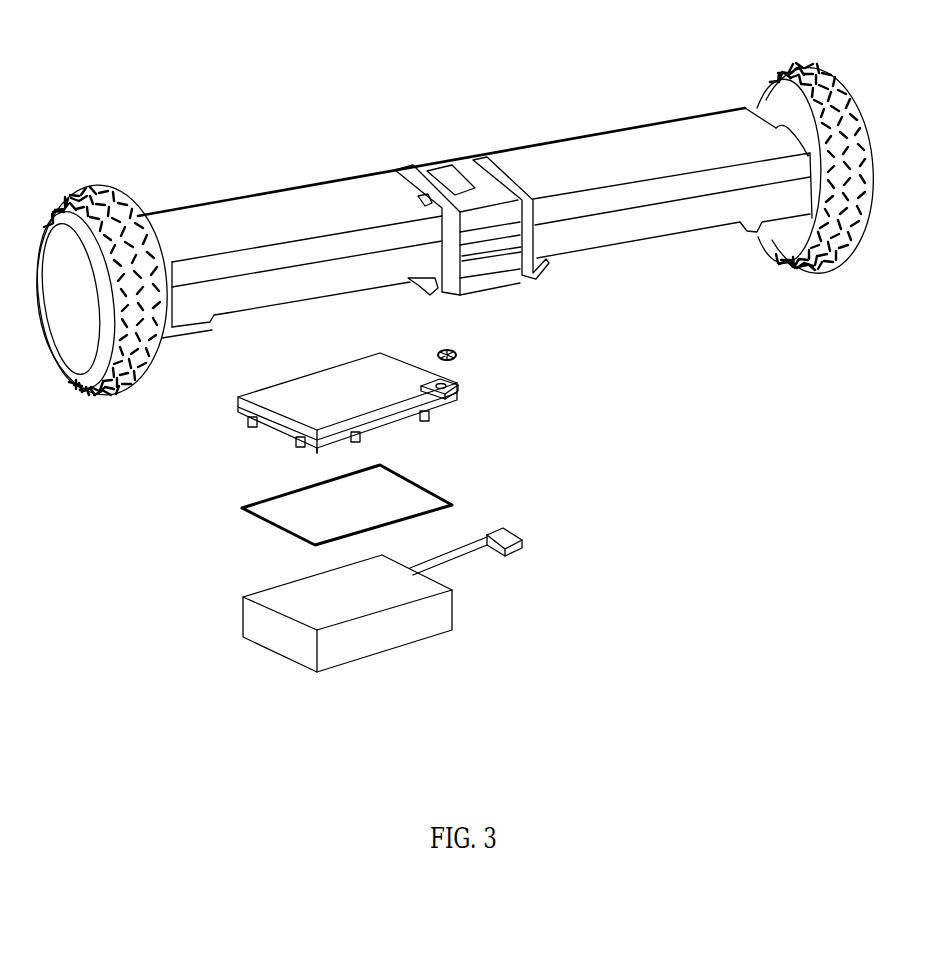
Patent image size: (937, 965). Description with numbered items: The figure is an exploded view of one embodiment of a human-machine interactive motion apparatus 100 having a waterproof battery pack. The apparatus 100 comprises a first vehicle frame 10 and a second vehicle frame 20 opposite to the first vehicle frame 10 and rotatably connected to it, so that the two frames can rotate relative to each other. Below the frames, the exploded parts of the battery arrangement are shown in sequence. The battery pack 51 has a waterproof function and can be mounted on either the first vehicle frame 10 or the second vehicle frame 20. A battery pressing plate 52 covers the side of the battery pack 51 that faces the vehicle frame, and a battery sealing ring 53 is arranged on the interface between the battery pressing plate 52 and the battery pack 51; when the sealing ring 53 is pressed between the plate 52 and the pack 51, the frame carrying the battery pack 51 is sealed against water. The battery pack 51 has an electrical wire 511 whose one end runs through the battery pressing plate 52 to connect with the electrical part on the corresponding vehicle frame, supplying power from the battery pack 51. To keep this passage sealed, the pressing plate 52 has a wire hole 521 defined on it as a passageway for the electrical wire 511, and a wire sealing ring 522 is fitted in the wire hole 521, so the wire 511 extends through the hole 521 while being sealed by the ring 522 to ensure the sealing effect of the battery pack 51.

The human-machine interactive motion apparatus 100 is at (437, 71).
The first vehicle frame 10 is at (282, 232).
The second vehicle frame 20 is at (673, 157).
The battery pressing plate 52 is at (325, 398).
The wire hole 521 is at (457, 392).
The wire sealing ring 522 is at (457, 352).
The battery sealing ring 53 is at (267, 527).
The battery pack 51 is at (325, 600).
The electrical wire 511 is at (482, 553).